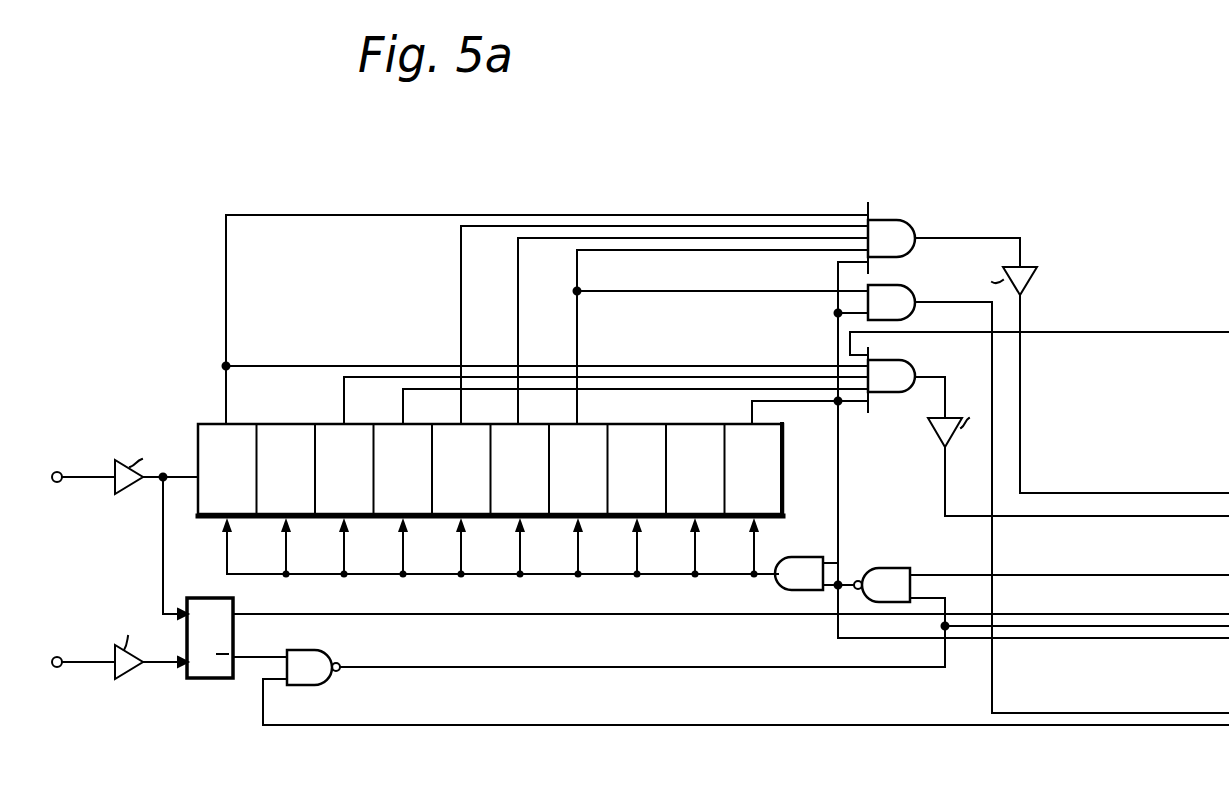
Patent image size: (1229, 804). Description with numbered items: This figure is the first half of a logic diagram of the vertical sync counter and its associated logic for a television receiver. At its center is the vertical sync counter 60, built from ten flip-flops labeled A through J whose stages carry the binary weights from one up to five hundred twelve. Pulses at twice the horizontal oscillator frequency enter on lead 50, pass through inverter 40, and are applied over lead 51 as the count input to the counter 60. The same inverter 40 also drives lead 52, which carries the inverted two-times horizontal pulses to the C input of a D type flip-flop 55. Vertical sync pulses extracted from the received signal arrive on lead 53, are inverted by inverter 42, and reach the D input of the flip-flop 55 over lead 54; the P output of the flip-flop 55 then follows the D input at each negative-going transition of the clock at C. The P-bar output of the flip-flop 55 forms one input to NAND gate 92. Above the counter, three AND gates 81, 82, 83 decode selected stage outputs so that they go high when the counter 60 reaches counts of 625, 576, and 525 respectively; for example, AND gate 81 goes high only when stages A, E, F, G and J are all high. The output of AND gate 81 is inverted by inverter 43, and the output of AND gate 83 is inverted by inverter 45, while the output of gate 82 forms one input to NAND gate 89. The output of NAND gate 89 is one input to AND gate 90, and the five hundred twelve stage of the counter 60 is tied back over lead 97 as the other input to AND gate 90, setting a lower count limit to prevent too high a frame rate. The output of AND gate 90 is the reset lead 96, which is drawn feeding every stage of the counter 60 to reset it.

The vertical sync counter 60 is at (198, 425).
The lead 50 is at (88, 477).
The inverter 40 is at (129, 487).
The lead 51 is at (182, 476).
The lead 52 is at (163, 563).
The lead 53 is at (88, 662).
The inverter 42 is at (130, 672).
The lead 54 is at (167, 665).
The D type flip-flop 55 is at (212, 680).
The NAND gate 92 is at (318, 650).
The reset lead 96 is at (612, 576).
The AND gate 90 is at (800, 590).
The NAND gate 89 is at (902, 570).
The lead 97 is at (838, 498).
The AND gate 81 is at (900, 220).
The AND gate 82 is at (900, 285).
The AND gate 83 is at (894, 360).
The count 625 output 625 is at (978, 238).
The inverter 43 is at (1037, 281).
The count 576 output 576 is at (992, 323).
The count 525 output 525 is at (930, 377).
The inverter 45 is at (934, 431).